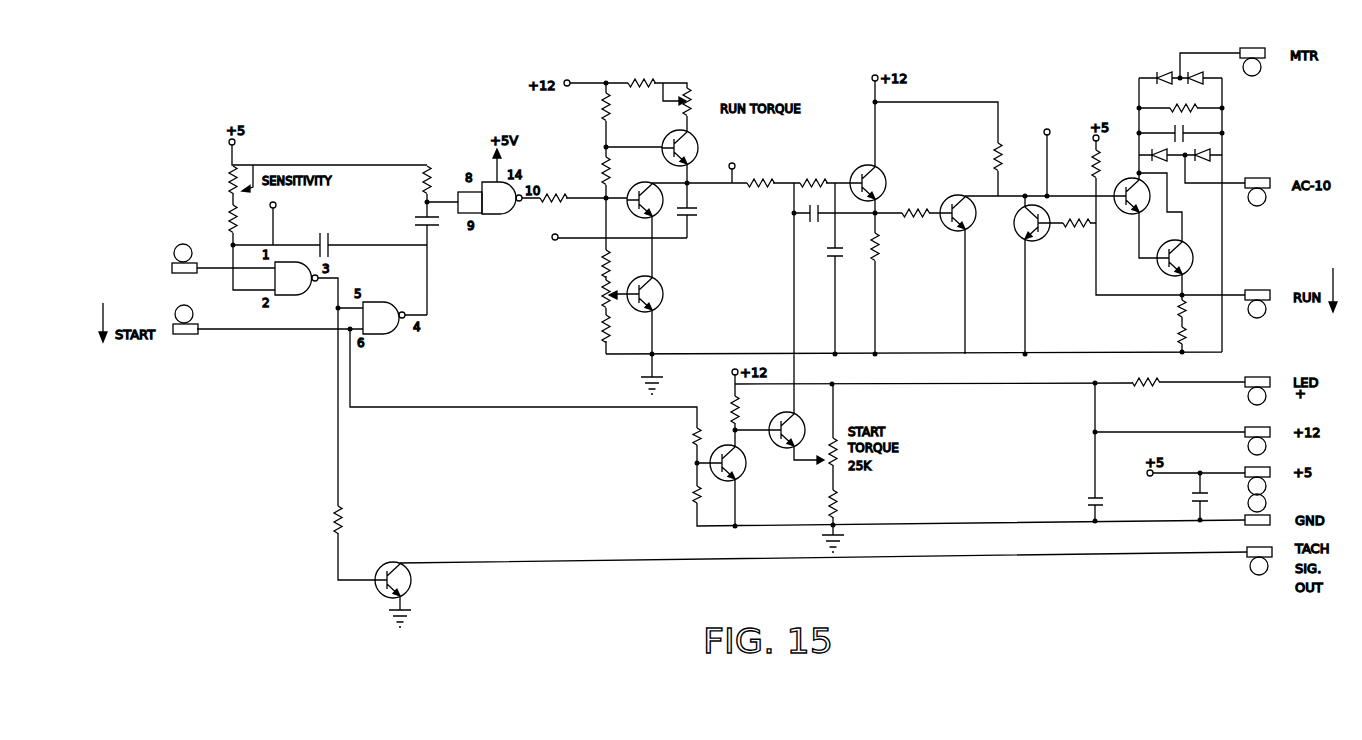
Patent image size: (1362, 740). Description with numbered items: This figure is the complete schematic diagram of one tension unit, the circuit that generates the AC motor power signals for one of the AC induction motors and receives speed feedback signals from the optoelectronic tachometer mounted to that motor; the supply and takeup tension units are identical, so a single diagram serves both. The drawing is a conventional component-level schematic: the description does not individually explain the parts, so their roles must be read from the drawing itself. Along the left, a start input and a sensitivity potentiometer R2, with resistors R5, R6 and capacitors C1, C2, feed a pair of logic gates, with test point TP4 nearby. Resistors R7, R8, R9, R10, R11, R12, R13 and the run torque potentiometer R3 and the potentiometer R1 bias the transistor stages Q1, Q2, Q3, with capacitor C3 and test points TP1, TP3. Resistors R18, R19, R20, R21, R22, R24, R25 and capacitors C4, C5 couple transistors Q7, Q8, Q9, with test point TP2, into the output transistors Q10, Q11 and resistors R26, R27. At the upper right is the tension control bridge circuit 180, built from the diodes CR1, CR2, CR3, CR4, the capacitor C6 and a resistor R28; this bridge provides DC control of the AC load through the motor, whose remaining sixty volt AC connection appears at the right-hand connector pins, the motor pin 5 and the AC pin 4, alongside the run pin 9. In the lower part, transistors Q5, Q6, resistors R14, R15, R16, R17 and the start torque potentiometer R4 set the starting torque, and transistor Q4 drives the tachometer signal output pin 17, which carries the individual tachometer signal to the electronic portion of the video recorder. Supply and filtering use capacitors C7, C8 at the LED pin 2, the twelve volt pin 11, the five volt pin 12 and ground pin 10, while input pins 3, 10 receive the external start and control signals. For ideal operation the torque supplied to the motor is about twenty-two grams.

The tension control bridge circuit 180 is at (1138, 93).
The 5K potentiometer R1 is at (590, 298).
The sensitivity potentiometer R2 is at (216, 180).
The run torque potentiometer R3 is at (710, 100).
The start torque potentiometer R4 is at (863, 455).
The resistor R5 is at (215, 219).
The 330K resistor R6 is at (406, 184).
The 10K resistor R7 is at (340, 520).
The resistor R8 is at (554, 208).
The 10K resistor R9 is at (602, 171).
The 1K resistor R10 is at (596, 107).
The 470 ohm resistor R11 is at (642, 68).
The 2.2K resistor R12 is at (607, 264).
The 2.2K resistor R13 is at (606, 329).
The 1M resistor R14 is at (665, 436).
The 1M resistor R15 is at (667, 495).
The 100K resistor R16 is at (739, 410).
The 22K resistor R17 is at (867, 504).
The 220K resistor R18 is at (762, 184).
The 220K resistor R19 is at (815, 167).
The 10K resistor R20 is at (890, 250).
The 10K resistor R21 is at (912, 212).
The 4.7K resistor R22 is at (979, 155).
The 10K resistor R24 is at (1081, 169).
The 4.7K resistor R25 is at (1074, 224).
The 10K resistor R26 is at (1174, 309).
The resistor R27 is at (1160, 336).
The resistor R28 is at (1167, 248).
The .001 capacitor C1 is at (341, 237).
The .001 capacitor C2 is at (410, 221).
The capacitor C3 is at (695, 215).
The capacitor C4 is at (811, 222).
The capacitor C5 is at (821, 262).
The capacitor C6 is at (1184, 130).
The 1.0uF 35V capacitor C7 is at (1095, 498).
The 1.0uF capacitor C8 is at (1203, 500).
The diode CR1 is at (1152, 71).
The diode CR2 is at (1201, 71).
The diode CR3 is at (1154, 149).
The diode CR4 is at (1200, 164).
The transistor Q1 is at (689, 142).
The transistor Q2 is at (638, 208).
The transistor Q3 is at (660, 294).
The tach signal output transistor Q4 is at (398, 571).
The transistor Q5 is at (738, 464).
The transistor Q6 is at (793, 424).
The transistor Q7 is at (873, 175).
The transistor Q8 is at (954, 221).
The transistor Q9 is at (1033, 234).
The transistor Q10 is at (1126, 206).
The transistor Q11 is at (1184, 253).
The test point 1 TP1 is at (728, 157).
The test point 2 TP2 is at (1046, 119).
The test point 3 TP3 is at (541, 247).
The test point 4 TP4 is at (288, 207).
The LED+ connector pin 2 is at (1257, 391).
The connector pin 3 is at (184, 258).
The AC-10 connector pin 4 is at (1257, 192).
The MTR connector pin 5 is at (1252, 62).
The RUN connector pin 9 is at (1257, 304).
The START / GND connector pin 10 is at (719, 408).
The +12 connector pin 11 is at (1257, 441).
The +5 connector pin 12 is at (1257, 481).
The TACH SIG OUT connector pin 17 is at (1259, 561).